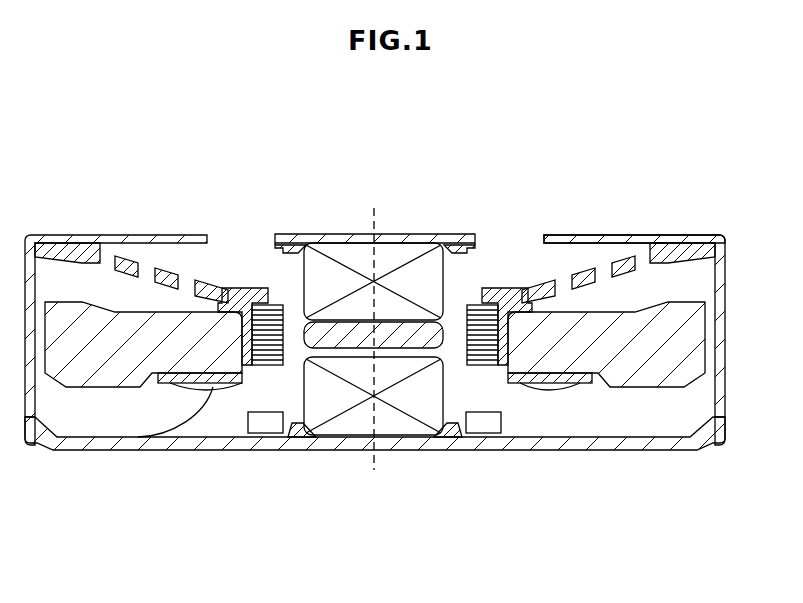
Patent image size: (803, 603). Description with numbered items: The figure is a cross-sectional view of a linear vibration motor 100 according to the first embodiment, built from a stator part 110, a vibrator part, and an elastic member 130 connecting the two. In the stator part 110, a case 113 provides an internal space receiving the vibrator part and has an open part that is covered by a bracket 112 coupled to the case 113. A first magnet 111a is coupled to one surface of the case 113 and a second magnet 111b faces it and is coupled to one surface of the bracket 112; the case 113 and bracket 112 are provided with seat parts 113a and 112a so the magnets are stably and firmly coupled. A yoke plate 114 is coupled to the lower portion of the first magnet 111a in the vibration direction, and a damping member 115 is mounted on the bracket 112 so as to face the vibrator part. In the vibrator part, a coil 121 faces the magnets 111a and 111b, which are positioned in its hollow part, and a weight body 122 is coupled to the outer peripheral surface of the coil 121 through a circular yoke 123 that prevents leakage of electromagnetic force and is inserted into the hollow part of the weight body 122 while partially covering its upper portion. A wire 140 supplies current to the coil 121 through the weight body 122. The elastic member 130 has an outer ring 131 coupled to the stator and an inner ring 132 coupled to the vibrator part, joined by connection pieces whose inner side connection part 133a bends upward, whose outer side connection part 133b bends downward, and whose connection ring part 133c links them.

The linear vibration motor 100 is at (64, 131).
The stator part 110 is at (575, 152).
The first magnet 111a is at (420, 280).
The second magnet 111b is at (395, 417).
The bracket 112 is at (535, 442).
The seat part 112a is at (312, 427).
The case 113 is at (571, 236).
The seat part 113a is at (285, 236).
The yoke plate 114 is at (342, 338).
The damping member 115 is at (265, 422).
The coil 121 is at (262, 355).
The weight body 122 is at (622, 367).
The circular yoke 123 is at (224, 288).
The elastic member 130 is at (610, 258).
The outer ring 131 is at (692, 243).
The inner ring 132 is at (491, 288).
The inner side connection part 133a is at (532, 285).
The outer side connection part 133b is at (657, 263).
The connection ring part 133c is at (126, 258).
The wire 140 is at (178, 437).